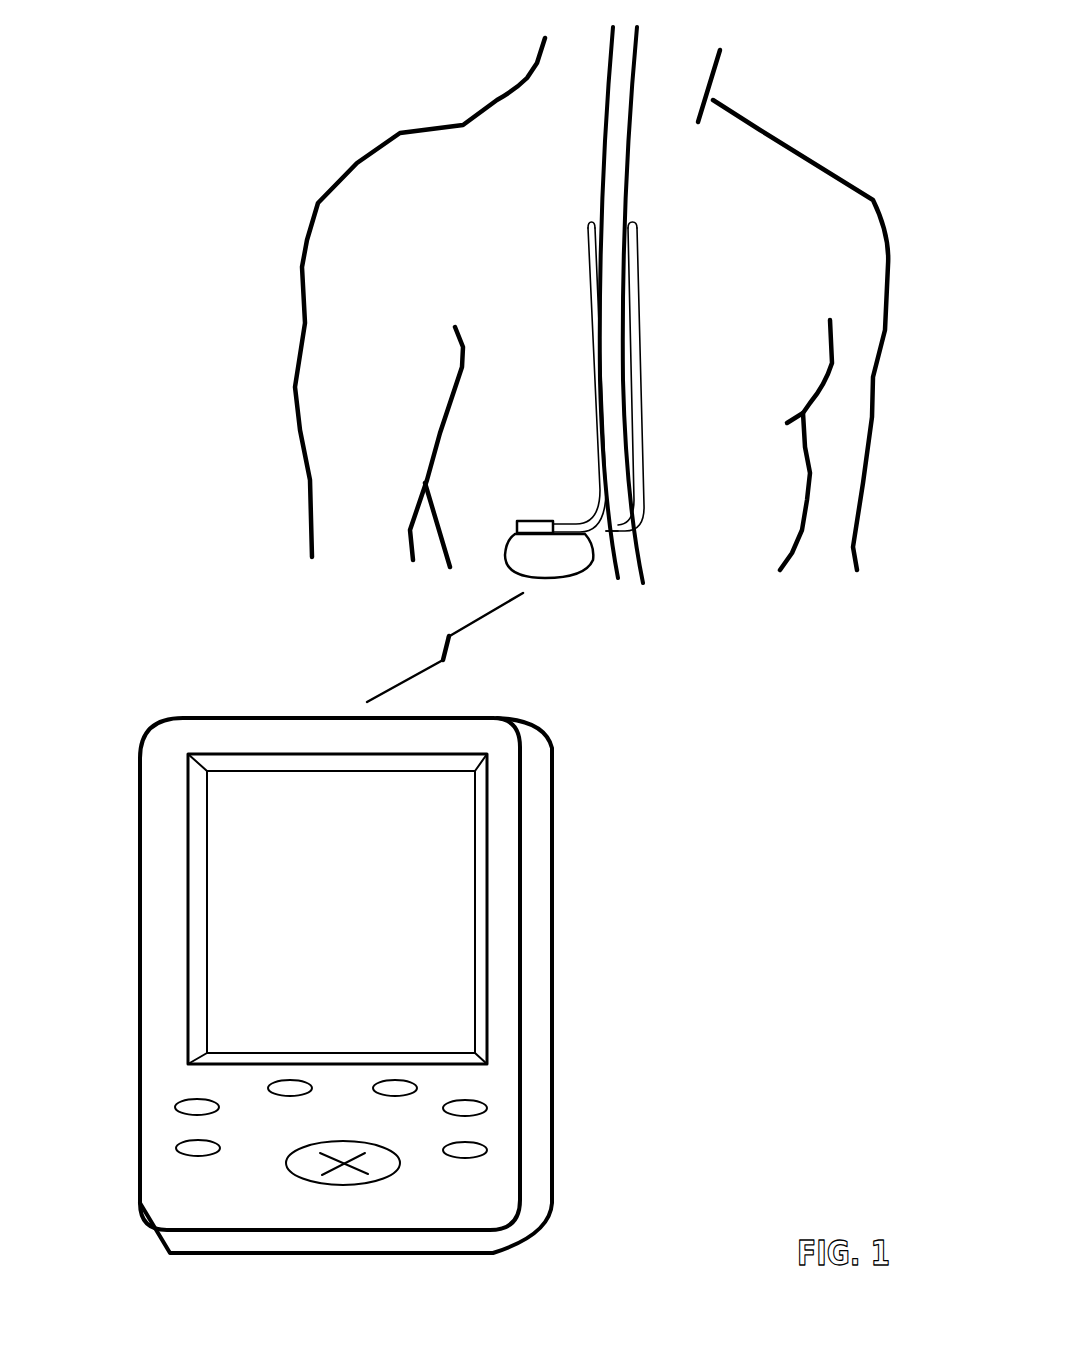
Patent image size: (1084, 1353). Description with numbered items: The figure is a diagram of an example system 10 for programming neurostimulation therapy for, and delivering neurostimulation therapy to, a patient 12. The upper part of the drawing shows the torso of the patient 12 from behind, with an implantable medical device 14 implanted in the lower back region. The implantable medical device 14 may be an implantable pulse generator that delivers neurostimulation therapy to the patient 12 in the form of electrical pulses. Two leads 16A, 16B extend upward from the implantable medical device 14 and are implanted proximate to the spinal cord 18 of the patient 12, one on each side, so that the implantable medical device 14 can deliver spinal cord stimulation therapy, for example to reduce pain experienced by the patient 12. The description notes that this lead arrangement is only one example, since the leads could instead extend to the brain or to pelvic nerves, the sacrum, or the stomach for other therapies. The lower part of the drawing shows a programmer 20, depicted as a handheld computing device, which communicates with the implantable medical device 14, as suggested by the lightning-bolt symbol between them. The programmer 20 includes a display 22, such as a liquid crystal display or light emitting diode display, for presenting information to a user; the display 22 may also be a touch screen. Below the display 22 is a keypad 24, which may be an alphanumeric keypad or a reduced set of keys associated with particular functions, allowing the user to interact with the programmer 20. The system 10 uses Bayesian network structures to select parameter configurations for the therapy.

The system 10 is at (165, 107).
The patient 12 is at (825, 121).
The implantable medical device 14 is at (515, 525).
The lead 16A is at (595, 345).
The lead 16B is at (658, 343).
The spinal cord 18 is at (655, 172).
The programmer 20 is at (410, 950).
The display 22 is at (433, 908).
The keypad 24 is at (437, 1170).